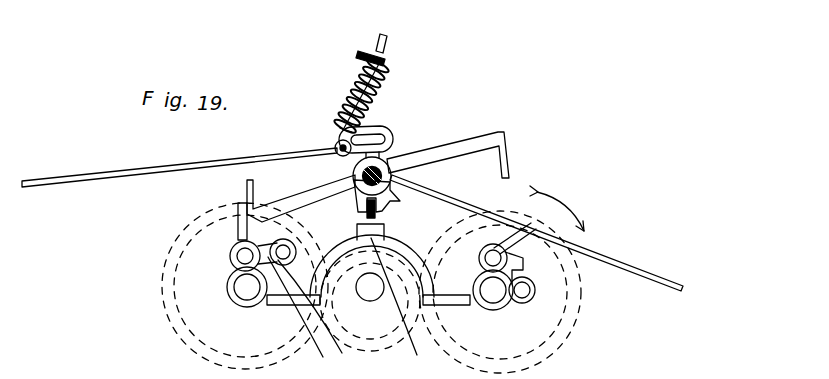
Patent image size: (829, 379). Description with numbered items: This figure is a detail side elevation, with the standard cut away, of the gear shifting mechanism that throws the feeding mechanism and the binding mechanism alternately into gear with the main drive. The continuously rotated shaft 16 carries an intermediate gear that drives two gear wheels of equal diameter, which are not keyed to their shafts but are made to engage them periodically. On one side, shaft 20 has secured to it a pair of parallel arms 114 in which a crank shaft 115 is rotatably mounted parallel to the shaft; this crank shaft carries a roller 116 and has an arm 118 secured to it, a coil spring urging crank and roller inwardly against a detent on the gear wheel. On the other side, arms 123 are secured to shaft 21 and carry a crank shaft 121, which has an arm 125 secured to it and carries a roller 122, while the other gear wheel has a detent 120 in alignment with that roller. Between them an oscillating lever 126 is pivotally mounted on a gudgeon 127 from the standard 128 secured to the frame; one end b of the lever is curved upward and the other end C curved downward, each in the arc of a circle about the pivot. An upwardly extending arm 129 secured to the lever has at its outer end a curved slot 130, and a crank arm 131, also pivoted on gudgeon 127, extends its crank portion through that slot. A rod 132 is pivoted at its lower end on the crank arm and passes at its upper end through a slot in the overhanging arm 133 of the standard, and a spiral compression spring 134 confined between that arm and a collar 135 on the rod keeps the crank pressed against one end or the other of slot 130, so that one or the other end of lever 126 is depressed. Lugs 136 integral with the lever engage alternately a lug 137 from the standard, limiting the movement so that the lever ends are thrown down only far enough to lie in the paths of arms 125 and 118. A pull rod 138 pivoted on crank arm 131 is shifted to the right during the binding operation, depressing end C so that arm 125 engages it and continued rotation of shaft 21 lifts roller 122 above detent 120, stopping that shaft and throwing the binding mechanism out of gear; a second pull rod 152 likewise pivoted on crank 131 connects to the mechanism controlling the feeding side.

The pull rod 152 is at (50, 180).
The rod 132 is at (377, 45).
The overhanging arm 133 is at (388, 57).
The spiral compression spring 134 is at (360, 90).
The collar 135 is at (340, 125).
The slot 130 is at (340, 140).
The crank arm 131 is at (336, 147).
The gudgeon 127 is at (378, 152).
The upwardly extending arm 129 is at (381, 127).
The oscillating lever 126 is at (452, 150).
The end of lever C is at (508, 158).
The pull rod 138 is at (686, 291).
The lugs 136 is at (396, 190).
The lug 137 is at (382, 205).
The end of lever b is at (245, 188).
The arm 118 is at (240, 222).
The parallel arms 114 is at (245, 278).
The shaft 20 is at (245, 288).
The crank shaft 115 is at (312, 318).
The roller 116 is at (381, 300).
The standard 128 is at (368, 301).
The shaft 16 is at (370, 290).
The arms 123 is at (492, 303).
The shaft 21 is at (496, 295).
The arm 125 is at (508, 257).
The detent 120 is at (521, 267).
The roller 122 is at (535, 287).
The crank shaft 121 is at (535, 297).